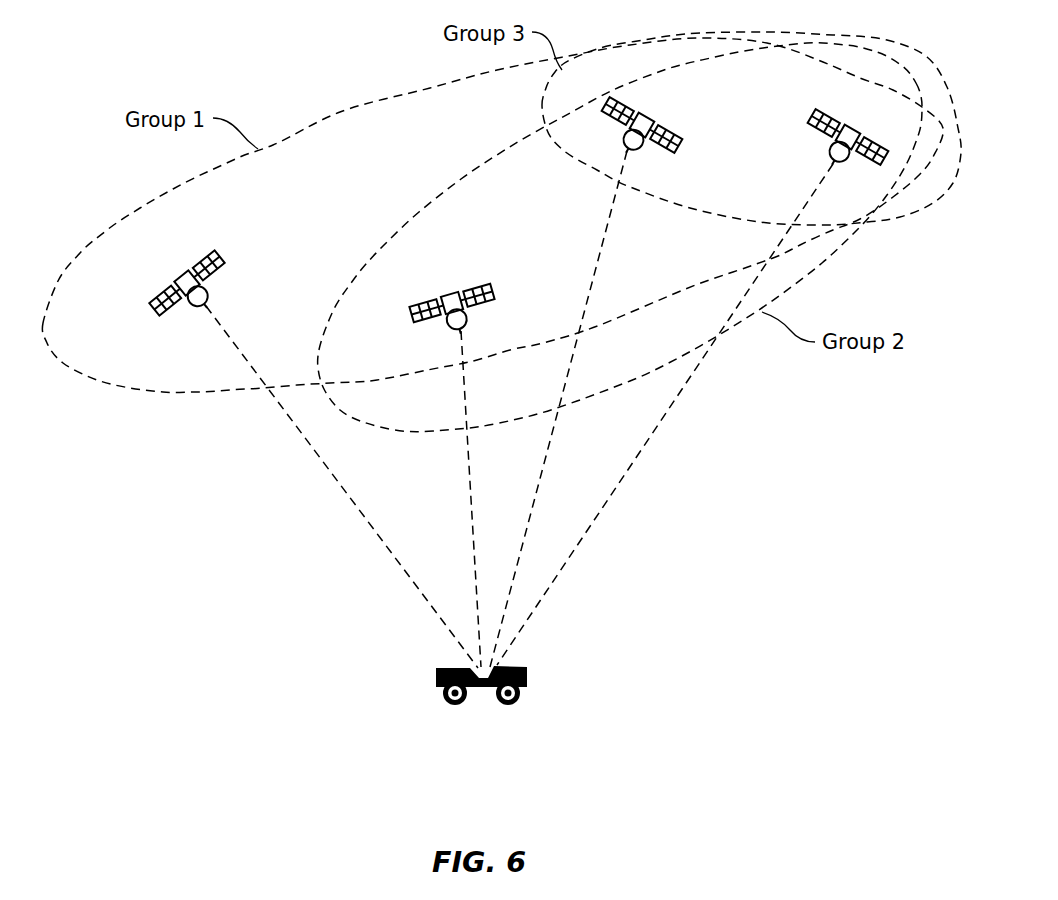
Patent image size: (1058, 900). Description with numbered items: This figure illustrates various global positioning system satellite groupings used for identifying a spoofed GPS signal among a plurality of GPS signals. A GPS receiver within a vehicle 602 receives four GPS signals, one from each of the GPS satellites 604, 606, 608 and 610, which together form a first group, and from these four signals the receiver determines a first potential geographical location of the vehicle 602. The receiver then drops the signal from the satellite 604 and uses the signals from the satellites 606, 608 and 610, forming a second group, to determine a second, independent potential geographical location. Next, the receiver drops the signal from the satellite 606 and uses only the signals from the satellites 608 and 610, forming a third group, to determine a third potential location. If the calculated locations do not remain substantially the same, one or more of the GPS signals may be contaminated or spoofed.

The vehicle 602 is at (530, 672).
The GPS satellite 604 is at (187, 273).
The GPS satellite 606 is at (452, 293).
The GPS satellite 608 is at (645, 115).
The GPS satellite 610 is at (851, 127).